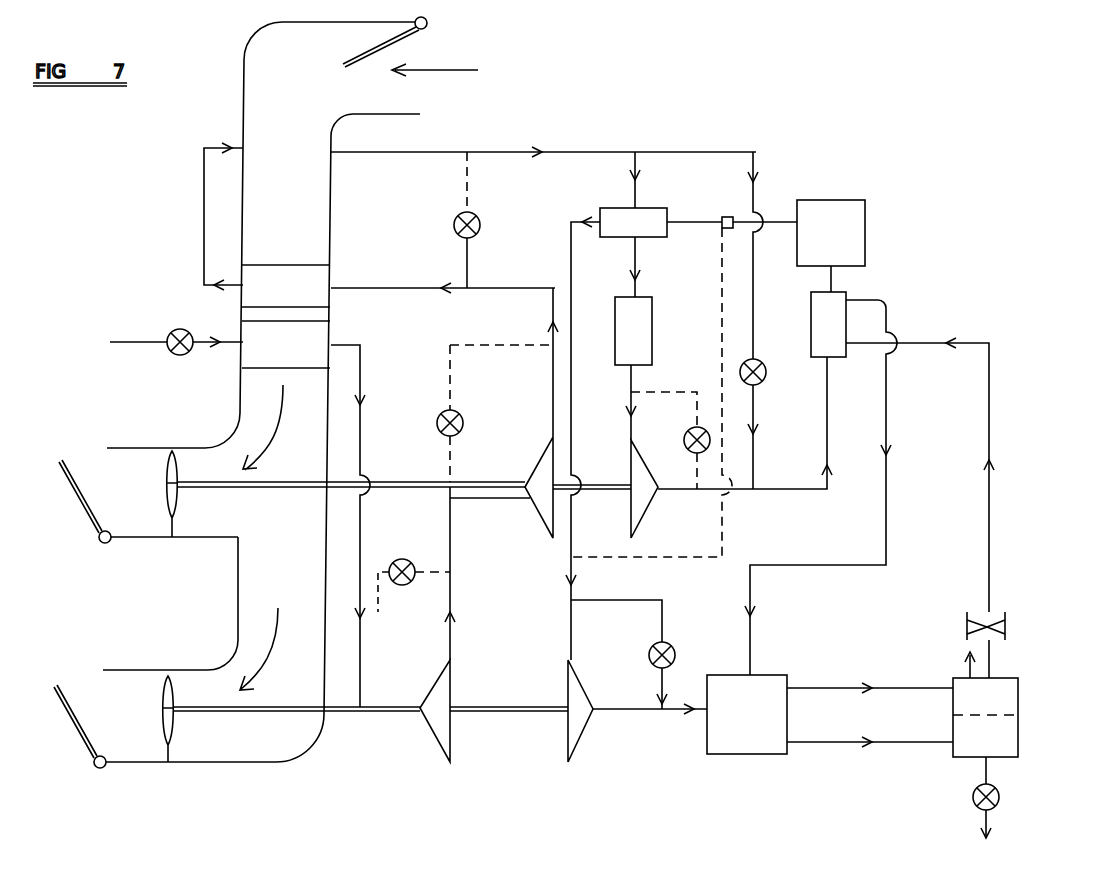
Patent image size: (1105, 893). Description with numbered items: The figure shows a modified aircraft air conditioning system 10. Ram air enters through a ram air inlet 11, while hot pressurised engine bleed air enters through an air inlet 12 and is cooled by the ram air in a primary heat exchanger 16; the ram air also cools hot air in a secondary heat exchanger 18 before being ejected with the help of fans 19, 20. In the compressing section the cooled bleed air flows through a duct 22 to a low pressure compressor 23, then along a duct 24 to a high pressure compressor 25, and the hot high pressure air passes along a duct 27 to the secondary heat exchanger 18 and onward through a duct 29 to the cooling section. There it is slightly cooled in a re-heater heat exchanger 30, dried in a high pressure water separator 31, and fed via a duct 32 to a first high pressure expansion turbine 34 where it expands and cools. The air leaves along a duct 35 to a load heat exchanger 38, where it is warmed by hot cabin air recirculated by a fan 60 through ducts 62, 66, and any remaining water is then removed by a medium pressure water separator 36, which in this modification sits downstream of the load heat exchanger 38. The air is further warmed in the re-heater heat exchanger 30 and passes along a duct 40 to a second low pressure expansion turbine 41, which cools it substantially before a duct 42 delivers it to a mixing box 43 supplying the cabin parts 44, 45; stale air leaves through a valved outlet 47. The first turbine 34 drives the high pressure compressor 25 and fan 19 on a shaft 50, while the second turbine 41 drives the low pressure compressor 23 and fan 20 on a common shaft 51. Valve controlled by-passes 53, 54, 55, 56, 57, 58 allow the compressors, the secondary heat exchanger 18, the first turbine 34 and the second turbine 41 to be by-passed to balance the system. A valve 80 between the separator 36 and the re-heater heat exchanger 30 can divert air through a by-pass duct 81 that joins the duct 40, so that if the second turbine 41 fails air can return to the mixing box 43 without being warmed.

The air conditioning system 10 is at (687, 138).
The ram air inlet 11 is at (430, 62).
The air inlet 12 is at (232, 342).
The primary heat exchanger 16 is at (290, 360).
The secondary heat exchanger 18 is at (283, 277).
The fan 19 is at (180, 497).
The fan 20 is at (173, 727).
The duct 22 is at (360, 448).
The low pressure compressor 23 is at (432, 726).
The duct 24 is at (450, 642).
The high pressure compressor 25 is at (538, 513).
The duct 27 is at (388, 288).
The duct 29 is at (566, 152).
The re-heater heat exchanger 30 is at (663, 208).
The high pressure water separator 31 is at (653, 327).
The duct 32 is at (631, 376).
The first high pressure expansion turbine 34 is at (647, 506).
The duct 35 is at (827, 489).
The medium pressure water separator 36 is at (865, 226).
The load heat exchanger 38 is at (810, 332).
The duct 40 is at (572, 450).
The second low pressure expansion turbine 41 is at (585, 732).
The duct 42 is at (638, 712).
The mixing box 43 is at (767, 755).
The aircraft cabin part 44 is at (1018, 698).
The aircraft cabin part 45 is at (1018, 746).
The outlet 47 is at (987, 772).
The shaft 50 is at (610, 488).
The common shaft 51 is at (530, 713).
The valve controlled by-pass 53 is at (378, 612).
The valve controlled by-pass 54 is at (483, 345).
The valve controlled by-pass 55 is at (467, 266).
The valve controlled by-pass 56 is at (676, 392).
The valve controlled by-pass 57 is at (753, 406).
The valve controlled by-pass 58 is at (598, 600).
The fan 60 is at (989, 640).
The duct 62 is at (988, 413).
The duct 66 is at (887, 482).
The valve 80 is at (727, 217).
The by-pass duct 81 is at (740, 531).